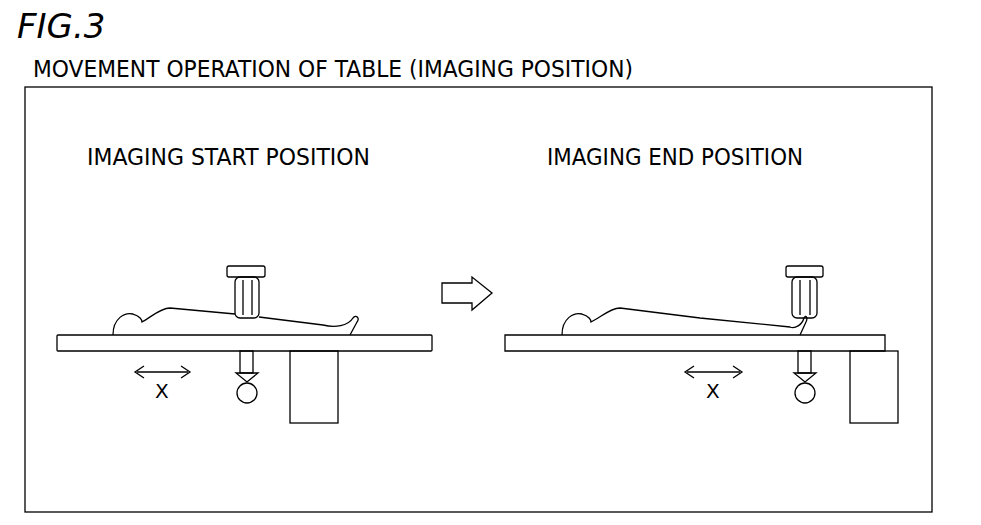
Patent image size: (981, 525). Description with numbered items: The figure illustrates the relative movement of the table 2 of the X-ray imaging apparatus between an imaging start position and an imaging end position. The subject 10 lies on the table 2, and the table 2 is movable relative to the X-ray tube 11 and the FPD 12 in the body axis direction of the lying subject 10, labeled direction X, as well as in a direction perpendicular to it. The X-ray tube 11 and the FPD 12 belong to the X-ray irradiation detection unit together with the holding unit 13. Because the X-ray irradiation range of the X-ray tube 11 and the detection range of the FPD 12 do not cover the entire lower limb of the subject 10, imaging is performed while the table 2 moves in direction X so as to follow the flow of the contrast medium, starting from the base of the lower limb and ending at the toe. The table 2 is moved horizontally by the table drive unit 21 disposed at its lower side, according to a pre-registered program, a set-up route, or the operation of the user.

The table 2 is at (413, 335).
The subject 10 is at (303, 322).
The X-ray tube 11 is at (238, 388).
The FPD 12 is at (266, 271).
The holding unit 13 is at (237, 302).
The table drive unit 21 is at (340, 378).